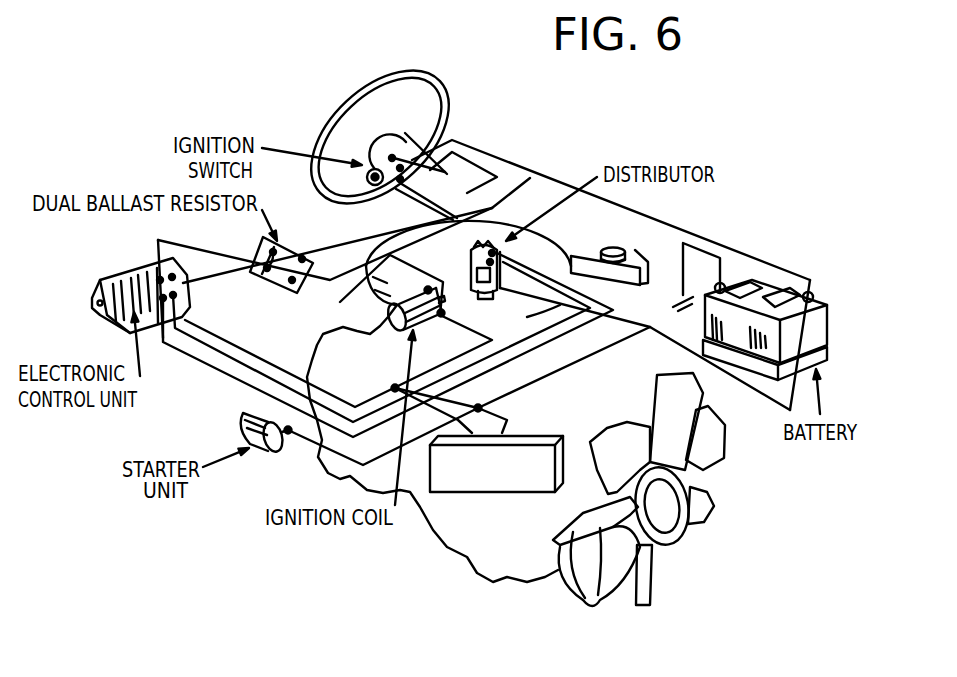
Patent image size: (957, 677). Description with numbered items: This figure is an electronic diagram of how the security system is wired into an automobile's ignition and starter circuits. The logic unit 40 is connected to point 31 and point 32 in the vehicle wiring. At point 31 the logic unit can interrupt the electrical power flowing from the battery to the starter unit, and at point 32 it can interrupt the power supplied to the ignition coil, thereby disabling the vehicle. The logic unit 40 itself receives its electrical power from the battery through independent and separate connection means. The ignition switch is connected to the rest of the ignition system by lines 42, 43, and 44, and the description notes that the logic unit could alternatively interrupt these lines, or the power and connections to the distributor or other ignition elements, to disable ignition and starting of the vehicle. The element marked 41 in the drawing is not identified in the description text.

The point 31 is at (482, 405).
The point 32 is at (392, 388).
The logic unit 40 is at (522, 437).
The engine 41 is at (606, 346).
The line 42 is at (479, 152).
The line 43 is at (497, 177).
The line 44 is at (505, 175).